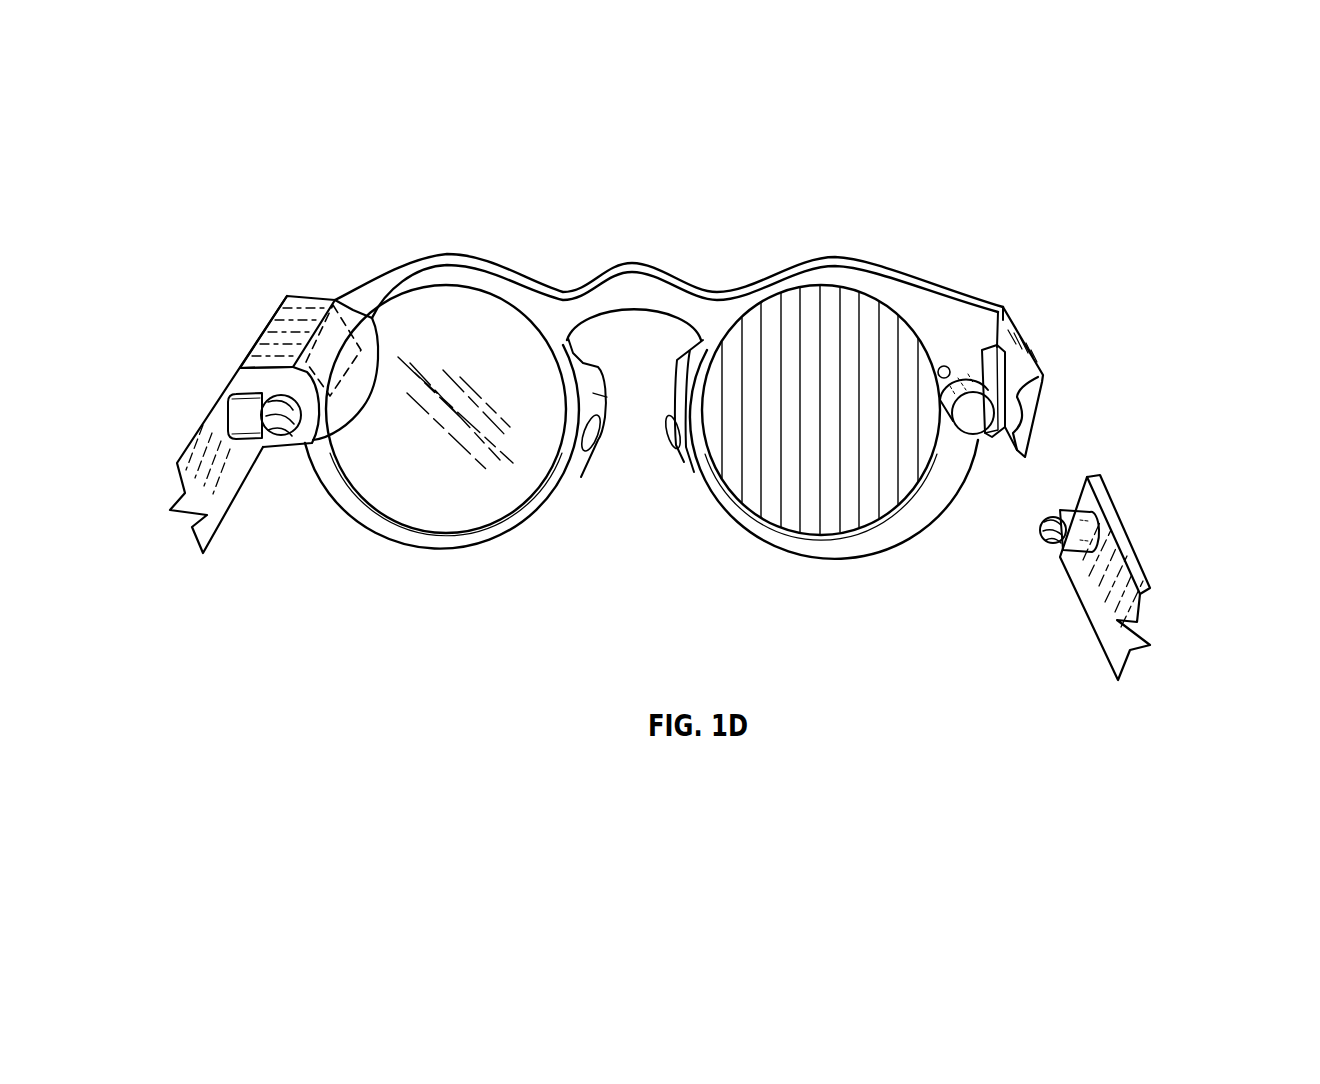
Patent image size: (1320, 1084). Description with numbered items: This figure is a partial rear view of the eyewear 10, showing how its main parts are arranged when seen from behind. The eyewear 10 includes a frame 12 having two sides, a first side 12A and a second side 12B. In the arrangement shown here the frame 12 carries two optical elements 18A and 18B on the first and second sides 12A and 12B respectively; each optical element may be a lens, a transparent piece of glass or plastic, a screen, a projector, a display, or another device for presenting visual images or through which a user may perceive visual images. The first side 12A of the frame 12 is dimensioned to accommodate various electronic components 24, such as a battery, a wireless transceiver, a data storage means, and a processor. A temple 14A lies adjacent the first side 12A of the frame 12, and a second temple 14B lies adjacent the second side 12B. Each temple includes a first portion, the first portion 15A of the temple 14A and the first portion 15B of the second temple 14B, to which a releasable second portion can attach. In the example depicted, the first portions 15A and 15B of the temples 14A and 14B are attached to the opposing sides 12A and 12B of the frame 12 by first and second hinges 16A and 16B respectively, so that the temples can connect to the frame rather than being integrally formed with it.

The eyewear 10 is at (215, 162).
The frame 12 is at (825, 260).
The first side 12A is at (287, 317).
The second side 12B is at (1004, 314).
The temple 14A is at (210, 437).
The second temple 14B is at (1083, 577).
The first portion 15A is at (273, 457).
The first portion 15B is at (1105, 478).
The hinge 16A is at (250, 407).
The second hinge 16B is at (1080, 502).
The optical element 18A is at (480, 497).
The optical element 18B is at (832, 515).
The electronic components 24 is at (330, 320).